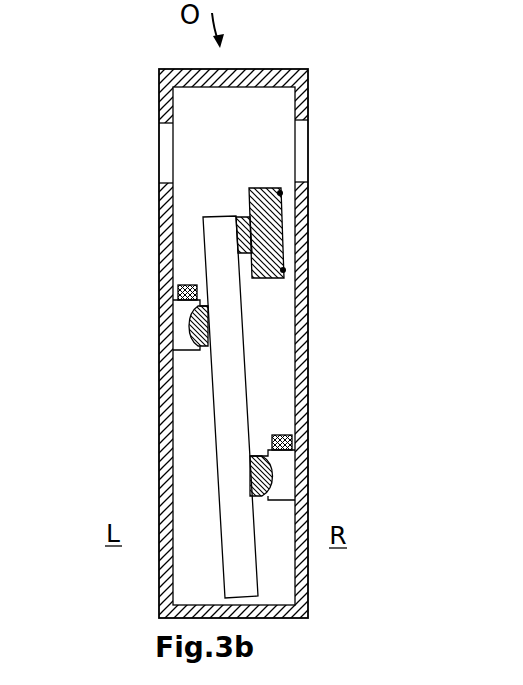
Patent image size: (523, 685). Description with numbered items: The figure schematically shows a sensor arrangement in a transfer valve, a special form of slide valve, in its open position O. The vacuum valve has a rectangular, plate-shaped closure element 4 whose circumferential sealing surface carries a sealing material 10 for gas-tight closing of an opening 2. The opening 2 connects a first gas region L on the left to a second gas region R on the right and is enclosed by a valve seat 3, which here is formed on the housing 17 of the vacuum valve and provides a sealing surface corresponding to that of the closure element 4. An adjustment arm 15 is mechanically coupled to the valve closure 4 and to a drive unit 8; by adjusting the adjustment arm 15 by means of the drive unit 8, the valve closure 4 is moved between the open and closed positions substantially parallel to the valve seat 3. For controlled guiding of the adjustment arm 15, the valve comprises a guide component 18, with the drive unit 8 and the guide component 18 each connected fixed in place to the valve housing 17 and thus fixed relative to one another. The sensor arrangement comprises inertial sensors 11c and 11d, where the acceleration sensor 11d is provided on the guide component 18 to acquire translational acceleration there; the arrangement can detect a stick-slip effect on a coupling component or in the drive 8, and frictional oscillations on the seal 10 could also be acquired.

The opening 2 is at (165, 155).
The valve seat 3 is at (295, 117).
The closure element 4 is at (270, 243).
The drive unit 8 is at (175, 440).
The sealing material 10 is at (283, 270).
The inertial sensor 11c is at (293, 435).
The acceleration sensor 11d is at (185, 290).
The adjustment arm 15 is at (232, 370).
The valve housing 17 is at (165, 472).
The guide component 18 is at (182, 310).